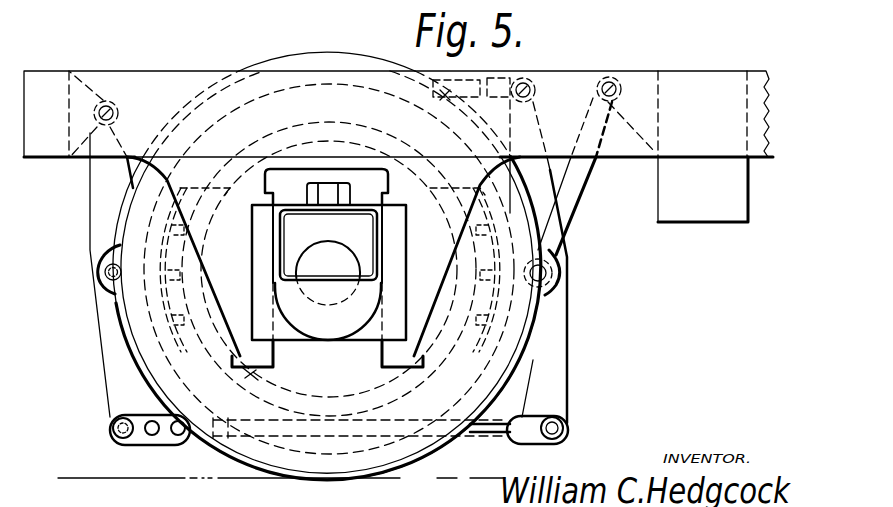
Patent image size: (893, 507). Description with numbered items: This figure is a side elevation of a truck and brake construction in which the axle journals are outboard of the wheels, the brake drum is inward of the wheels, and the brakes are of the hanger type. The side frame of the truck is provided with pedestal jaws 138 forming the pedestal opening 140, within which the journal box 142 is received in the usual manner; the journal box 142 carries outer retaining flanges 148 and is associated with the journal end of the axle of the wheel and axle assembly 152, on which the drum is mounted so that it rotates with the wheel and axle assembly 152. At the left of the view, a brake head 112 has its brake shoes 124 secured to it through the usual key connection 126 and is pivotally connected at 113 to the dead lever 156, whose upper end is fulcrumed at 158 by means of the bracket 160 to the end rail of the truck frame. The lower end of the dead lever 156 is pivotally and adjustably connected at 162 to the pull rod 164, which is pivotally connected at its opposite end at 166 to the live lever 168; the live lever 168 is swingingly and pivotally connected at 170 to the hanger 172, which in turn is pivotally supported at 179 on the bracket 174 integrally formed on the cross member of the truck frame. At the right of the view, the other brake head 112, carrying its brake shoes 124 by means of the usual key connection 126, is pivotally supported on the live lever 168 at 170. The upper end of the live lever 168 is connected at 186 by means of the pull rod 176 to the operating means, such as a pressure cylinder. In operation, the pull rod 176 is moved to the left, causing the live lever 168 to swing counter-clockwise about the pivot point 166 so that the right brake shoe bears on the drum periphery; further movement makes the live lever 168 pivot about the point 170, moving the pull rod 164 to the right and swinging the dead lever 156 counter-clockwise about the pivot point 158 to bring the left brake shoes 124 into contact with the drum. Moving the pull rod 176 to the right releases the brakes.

The brake head 112 is at (157, 217).
The pivotal connection 113 is at (108, 278).
The brake shoes 124 is at (200, 187).
The key connection 126 is at (182, 187).
The pedestal jaws 138 is at (260, 358).
The pedestal opening 140 is at (282, 182).
The journal box 142 is at (285, 332).
The outer retaining flanges 148 is at (262, 240).
The wheel and axle assembly 152 is at (322, 480).
The dead lever 156 is at (108, 353).
The fulcrum 158 is at (112, 115).
The bracket 160 is at (78, 88).
The pivotal and adjustable connection 162 is at (112, 432).
The pull rod 164 is at (283, 430).
The pivotal connection 166 is at (567, 417).
The live lever 168 is at (571, 310).
The pivotal connection 170 is at (548, 272).
The hanger 172 is at (575, 205).
The bracket 174 is at (647, 118).
The pull rod 176 is at (447, 93).
The pivotal support 179 is at (614, 86).
The connection 186 is at (530, 88).